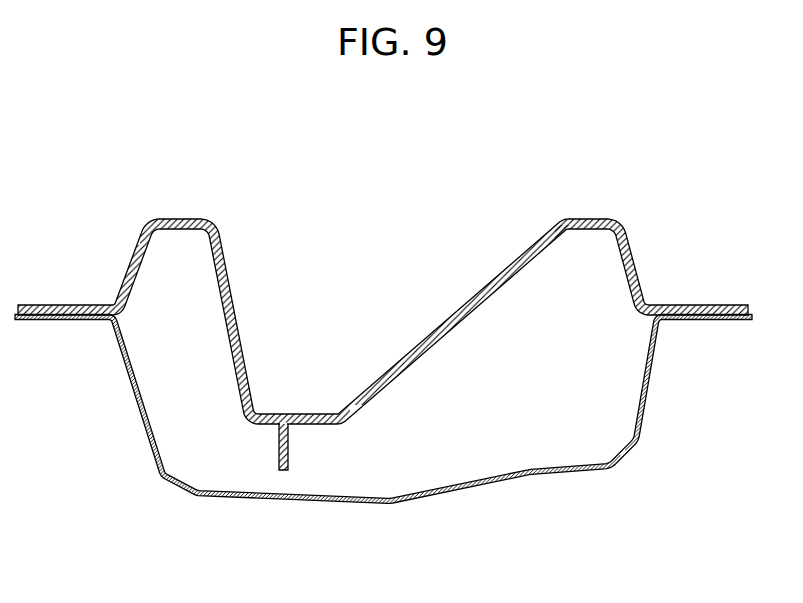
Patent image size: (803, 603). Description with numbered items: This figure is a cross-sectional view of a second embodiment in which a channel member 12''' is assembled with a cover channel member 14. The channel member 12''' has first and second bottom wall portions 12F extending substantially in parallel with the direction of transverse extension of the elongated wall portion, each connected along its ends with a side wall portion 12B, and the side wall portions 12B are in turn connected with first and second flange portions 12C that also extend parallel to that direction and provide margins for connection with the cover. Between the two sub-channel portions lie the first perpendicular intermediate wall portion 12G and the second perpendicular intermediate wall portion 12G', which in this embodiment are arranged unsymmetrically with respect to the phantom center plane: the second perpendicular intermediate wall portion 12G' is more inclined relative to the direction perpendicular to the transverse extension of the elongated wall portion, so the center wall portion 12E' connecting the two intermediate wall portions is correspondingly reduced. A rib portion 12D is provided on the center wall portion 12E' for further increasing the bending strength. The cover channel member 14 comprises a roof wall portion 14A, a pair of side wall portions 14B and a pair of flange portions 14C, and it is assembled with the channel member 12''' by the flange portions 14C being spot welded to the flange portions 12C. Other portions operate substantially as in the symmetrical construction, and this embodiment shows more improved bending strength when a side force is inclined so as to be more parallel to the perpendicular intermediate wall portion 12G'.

The channel member 12''' is at (383, 309).
The side wall portions 12B is at (140, 274).
The flange portions 12C is at (70, 302).
The rib portions 12D is at (275, 457).
The center wall portion 12E' is at (313, 432).
The bottom wall portions 12F is at (182, 212).
The perpendicular intermediate wall portion 12G is at (259, 325).
The perpendicular intermediate wall portion 12G' is at (460, 315).
The cover channel member 14 is at (152, 480).
The roof wall portion 14A is at (382, 503).
The side wall portions 14B is at (138, 418).
The flange portions 14C is at (40, 322).